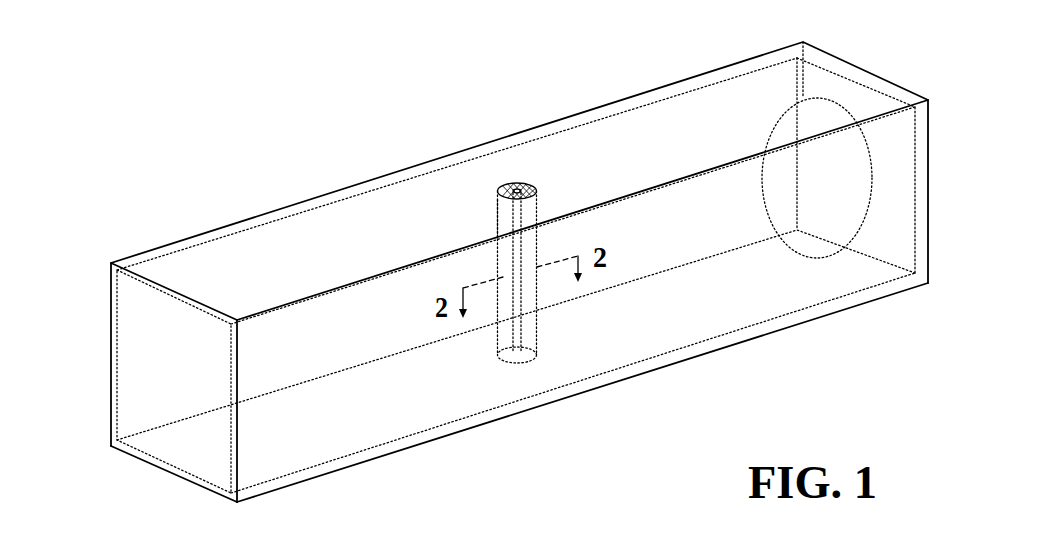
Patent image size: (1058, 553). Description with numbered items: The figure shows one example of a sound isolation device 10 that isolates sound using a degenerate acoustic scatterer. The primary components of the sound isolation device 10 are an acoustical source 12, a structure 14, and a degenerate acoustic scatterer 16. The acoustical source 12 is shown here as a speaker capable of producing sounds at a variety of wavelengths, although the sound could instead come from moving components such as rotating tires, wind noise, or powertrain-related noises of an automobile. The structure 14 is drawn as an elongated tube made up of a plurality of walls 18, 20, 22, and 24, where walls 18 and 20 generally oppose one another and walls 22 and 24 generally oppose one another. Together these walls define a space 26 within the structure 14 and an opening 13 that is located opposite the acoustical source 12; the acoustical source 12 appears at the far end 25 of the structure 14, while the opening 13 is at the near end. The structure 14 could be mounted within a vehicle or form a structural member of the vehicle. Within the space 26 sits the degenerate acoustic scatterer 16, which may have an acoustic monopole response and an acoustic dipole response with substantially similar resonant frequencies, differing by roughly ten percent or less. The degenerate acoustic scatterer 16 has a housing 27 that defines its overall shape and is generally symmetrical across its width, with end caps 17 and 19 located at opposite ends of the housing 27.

The sound isolation device 10 is at (365, 126).
The acoustical source 12 is at (814, 114).
The opening 13 is at (158, 397).
The structure 14 is at (697, 308).
The degenerate acoustic scatterer 16 is at (520, 352).
The end cap 17 is at (520, 183).
The wall 18 is at (385, 407).
The end cap 19 is at (513, 360).
The wall 20 is at (143, 363).
The wall 22 is at (217, 270).
The wall 24 is at (192, 452).
The closed end wall 25 is at (930, 172).
The space 26 is at (447, 380).
The housing 27 is at (498, 218).